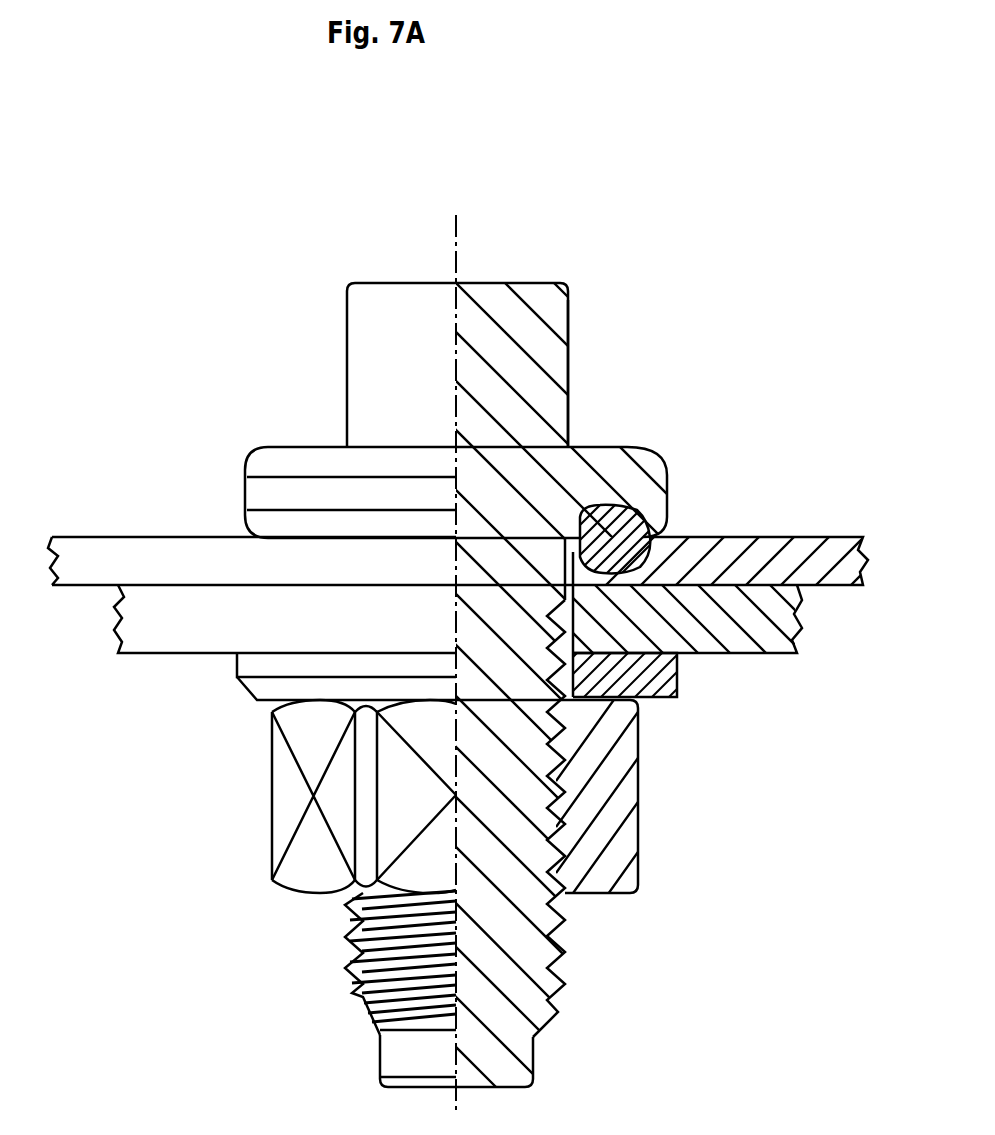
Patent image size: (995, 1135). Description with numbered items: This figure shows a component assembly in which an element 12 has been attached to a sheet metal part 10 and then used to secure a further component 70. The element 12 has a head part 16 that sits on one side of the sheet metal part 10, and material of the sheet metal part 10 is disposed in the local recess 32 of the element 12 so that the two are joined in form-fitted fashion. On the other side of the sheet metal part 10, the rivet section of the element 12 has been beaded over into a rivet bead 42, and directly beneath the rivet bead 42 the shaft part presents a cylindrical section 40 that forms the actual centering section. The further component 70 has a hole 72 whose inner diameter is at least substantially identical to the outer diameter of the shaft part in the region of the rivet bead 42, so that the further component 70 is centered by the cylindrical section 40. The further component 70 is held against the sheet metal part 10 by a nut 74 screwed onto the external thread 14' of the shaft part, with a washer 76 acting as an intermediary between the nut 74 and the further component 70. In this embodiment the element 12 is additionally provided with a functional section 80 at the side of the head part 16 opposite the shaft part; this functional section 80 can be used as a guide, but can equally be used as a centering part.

The sheet metal part 10 is at (800, 532).
The element 12 is at (545, 1060).
The external thread 14' is at (490, 818).
The head part 16 is at (574, 447).
The local recess 32 is at (625, 448).
The cylindrical section 40 is at (567, 582).
The rivet bead 42 is at (655, 512).
The further component 70 is at (772, 662).
The hole 72 is at (567, 622).
The nut 74 is at (618, 806).
The washer 76 is at (665, 668).
The functional section 80 is at (531, 283).